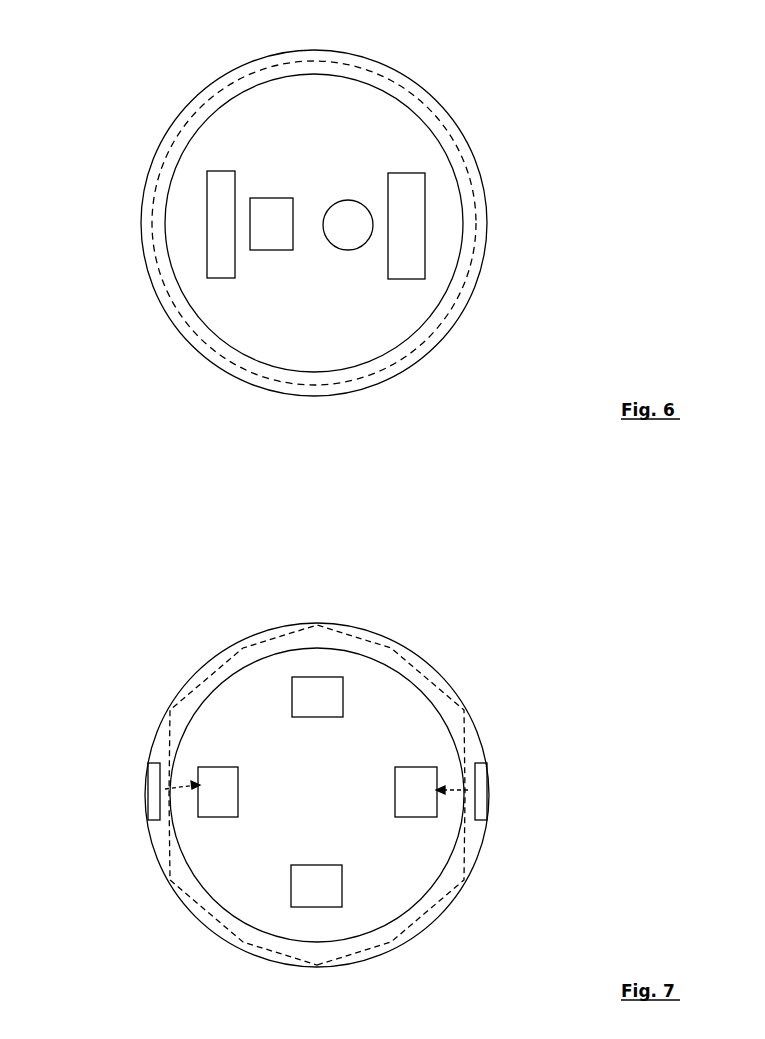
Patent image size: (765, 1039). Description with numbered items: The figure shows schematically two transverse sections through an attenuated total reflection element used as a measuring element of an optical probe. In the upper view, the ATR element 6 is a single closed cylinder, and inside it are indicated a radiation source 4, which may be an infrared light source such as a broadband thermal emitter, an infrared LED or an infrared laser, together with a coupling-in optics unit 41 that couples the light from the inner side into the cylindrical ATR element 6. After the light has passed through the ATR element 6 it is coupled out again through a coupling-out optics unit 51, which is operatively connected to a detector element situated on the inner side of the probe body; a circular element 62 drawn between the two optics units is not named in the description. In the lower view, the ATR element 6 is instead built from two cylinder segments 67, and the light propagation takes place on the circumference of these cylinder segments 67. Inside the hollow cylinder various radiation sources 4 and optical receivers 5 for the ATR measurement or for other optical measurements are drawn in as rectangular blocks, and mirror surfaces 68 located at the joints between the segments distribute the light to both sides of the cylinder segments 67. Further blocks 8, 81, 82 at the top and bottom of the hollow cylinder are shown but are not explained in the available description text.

In FIG. 6, the ATR element 6 is at (172, 135).
In FIG. 7, the ATR element 6 is at (148, 684).
In FIG. 6, the coupling-in optics unit 41 is at (217, 183).
In FIG. 6, the radiation source 4 is at (264, 206).
In FIG. 7, the radiation source 4 is at (221, 775).
In FIG. 6, the circular opening 62 is at (345, 208).
In FIG. 6, the coupling-out optics unit 51 is at (410, 190).
In FIG. 7, the optical receiver 5 is at (422, 775).
In FIG. 7, the cylinder segment 67 is at (162, 735).
In FIG. 7, the mirror surface 68 is at (167, 790).
In FIG. 7, the mounting block 8 is at (215, 755).
In FIG. 7, the lower mounting block 81 is at (310, 882).
In FIG. 7, the upper mounting block 82 is at (317, 693).